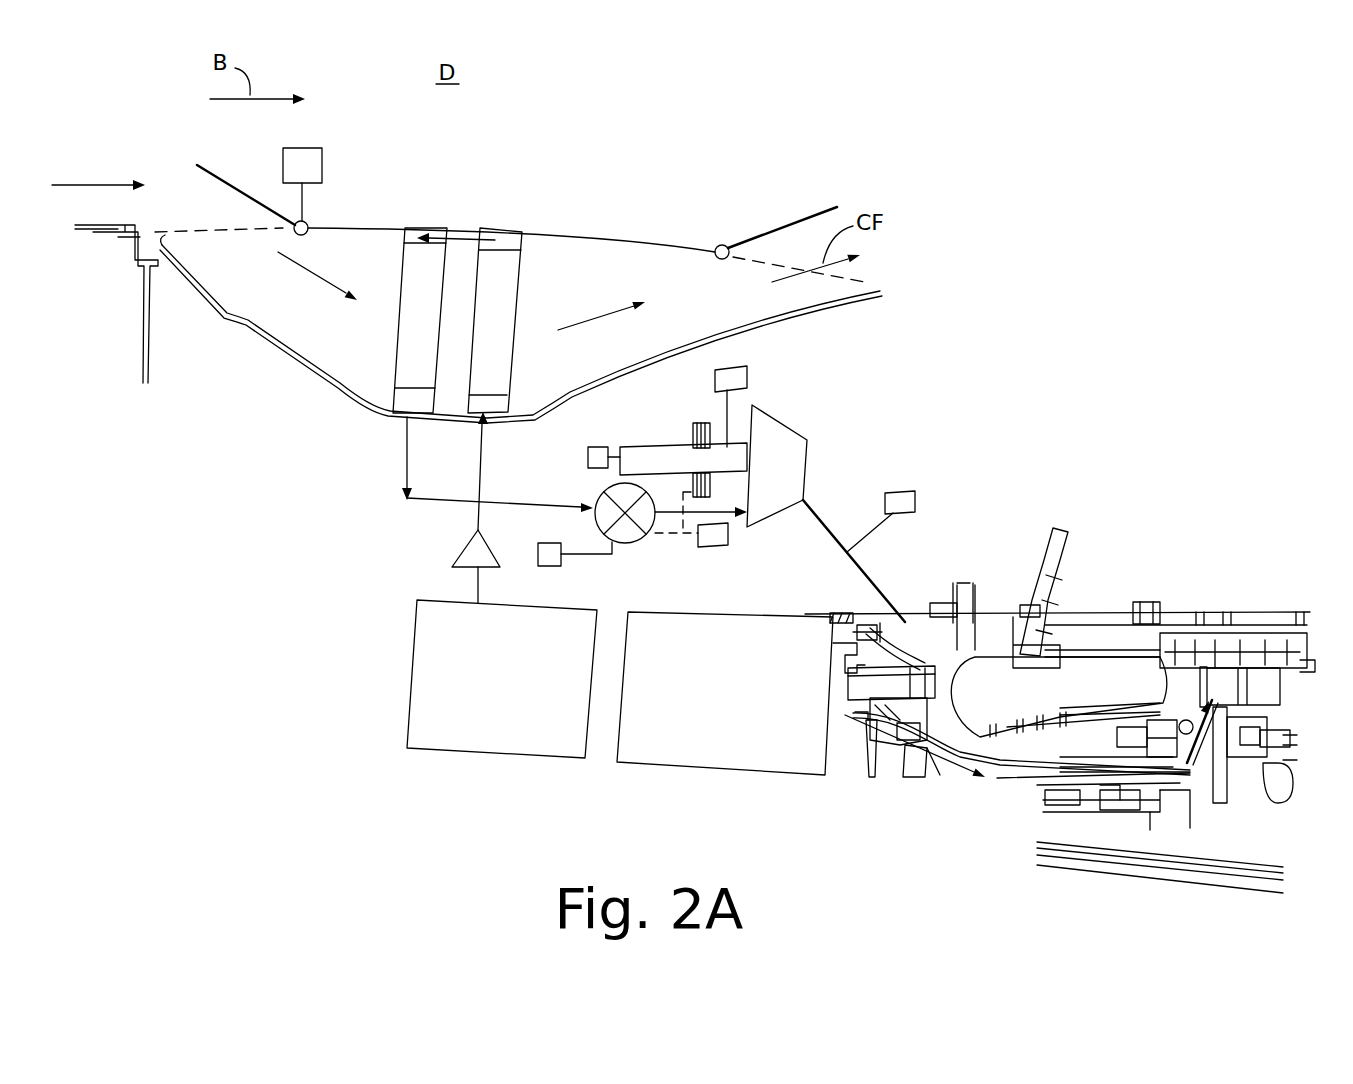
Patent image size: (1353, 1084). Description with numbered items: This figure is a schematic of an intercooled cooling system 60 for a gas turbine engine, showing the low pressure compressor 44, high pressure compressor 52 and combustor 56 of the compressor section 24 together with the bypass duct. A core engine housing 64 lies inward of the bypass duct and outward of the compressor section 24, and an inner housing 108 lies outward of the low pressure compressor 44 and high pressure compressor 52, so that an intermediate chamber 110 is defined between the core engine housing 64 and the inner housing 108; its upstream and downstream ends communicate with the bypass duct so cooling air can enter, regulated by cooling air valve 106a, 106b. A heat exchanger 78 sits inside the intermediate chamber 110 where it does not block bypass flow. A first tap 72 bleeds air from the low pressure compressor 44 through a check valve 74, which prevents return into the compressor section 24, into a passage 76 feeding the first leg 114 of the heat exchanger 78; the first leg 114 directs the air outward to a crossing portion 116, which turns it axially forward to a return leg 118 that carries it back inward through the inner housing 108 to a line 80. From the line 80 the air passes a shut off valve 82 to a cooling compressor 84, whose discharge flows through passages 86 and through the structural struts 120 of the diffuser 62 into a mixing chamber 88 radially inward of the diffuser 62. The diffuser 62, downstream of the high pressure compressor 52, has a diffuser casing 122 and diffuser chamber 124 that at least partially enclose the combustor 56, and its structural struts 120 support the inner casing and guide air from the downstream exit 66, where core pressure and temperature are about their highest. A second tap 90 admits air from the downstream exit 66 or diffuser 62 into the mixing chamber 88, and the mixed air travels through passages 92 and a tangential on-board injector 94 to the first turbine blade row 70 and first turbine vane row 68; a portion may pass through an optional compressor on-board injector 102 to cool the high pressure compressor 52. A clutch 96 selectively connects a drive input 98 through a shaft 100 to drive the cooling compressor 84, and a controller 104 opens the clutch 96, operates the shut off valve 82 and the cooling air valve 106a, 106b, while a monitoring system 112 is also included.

The compressor section 24 is at (567, 784).
The low pressure compressor 44 is at (450, 683).
The high pressure compressor 52 is at (657, 723).
The combustor 56 is at (1057, 680).
The intercooled cooling system 60 is at (941, 143).
The diffuser 62 is at (925, 678).
The core engine housing 64 is at (565, 230).
The downstream exit 66 is at (830, 613).
The first turbine vane row 68 is at (1167, 677).
The first turbine blade row 70 is at (1195, 684).
The first tap 72 is at (473, 590).
The check valve 74 is at (468, 540).
The passage 76 is at (480, 467).
The heat exchanger 78 is at (497, 328).
The line 80 is at (422, 500).
The shut off valve 82 is at (627, 544).
The cooling compressor 84 is at (772, 437).
The passages 86 is at (862, 570).
The mixing chamber 88 is at (897, 740).
The second tap 90 is at (873, 707).
The passages 92 is at (963, 768).
The tangential on-board injector 94 is at (1167, 787).
The clutch 96 is at (693, 440).
The drive input 98 is at (588, 457).
The shaft 100 is at (640, 450).
The compressor on-board injector 102 is at (867, 727).
The controller 104 is at (712, 548).
The cooling air valve 106a is at (232, 183).
The cooling air valve 106b is at (803, 220).
The inner housing 108 is at (345, 393).
The intermediate chamber 110 is at (527, 367).
The monitoring system 112 is at (323, 167).
The first leg 114 is at (488, 292).
The crossing portion 116 is at (460, 235).
The return leg 118 is at (413, 293).
The structural struts 120 is at (915, 672).
The diffuser casing 122 is at (830, 630).
The diffuser chamber 124 is at (942, 650).